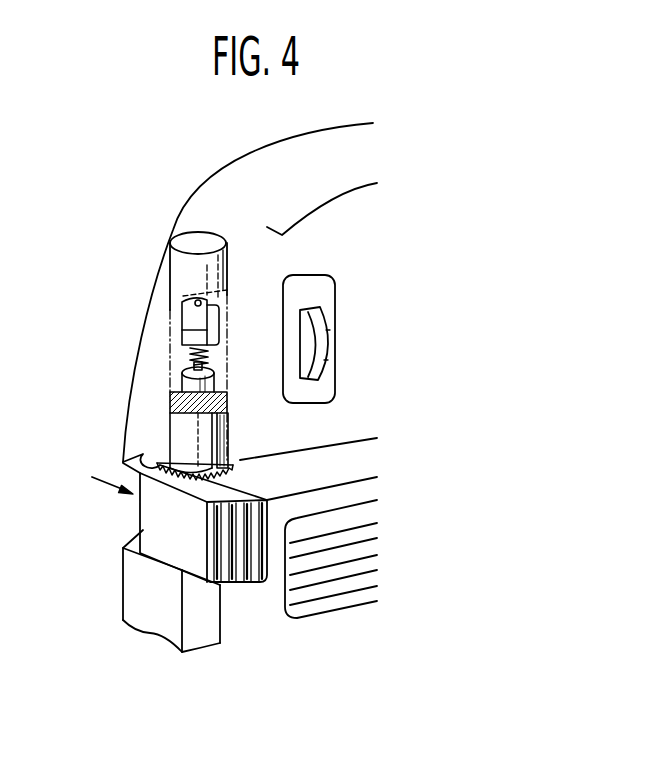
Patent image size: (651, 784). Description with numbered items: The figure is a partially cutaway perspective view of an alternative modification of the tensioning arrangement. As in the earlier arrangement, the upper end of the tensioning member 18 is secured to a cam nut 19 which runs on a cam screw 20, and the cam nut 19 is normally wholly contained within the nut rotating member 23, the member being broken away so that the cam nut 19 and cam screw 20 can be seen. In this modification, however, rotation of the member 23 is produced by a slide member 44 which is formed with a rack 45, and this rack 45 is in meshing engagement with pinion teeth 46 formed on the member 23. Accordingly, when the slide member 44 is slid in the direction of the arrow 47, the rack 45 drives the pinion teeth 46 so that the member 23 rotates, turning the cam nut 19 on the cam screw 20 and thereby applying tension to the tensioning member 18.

The tensioning member 18 is at (198, 432).
The cam nut 19 is at (183, 330).
The cam screw 20 is at (185, 358).
The nut rotating member 23 is at (180, 263).
The slide member 44 is at (160, 520).
The rack 45 is at (147, 458).
The pinion teeth 46 is at (230, 467).
The arrow 47 is at (92, 477).